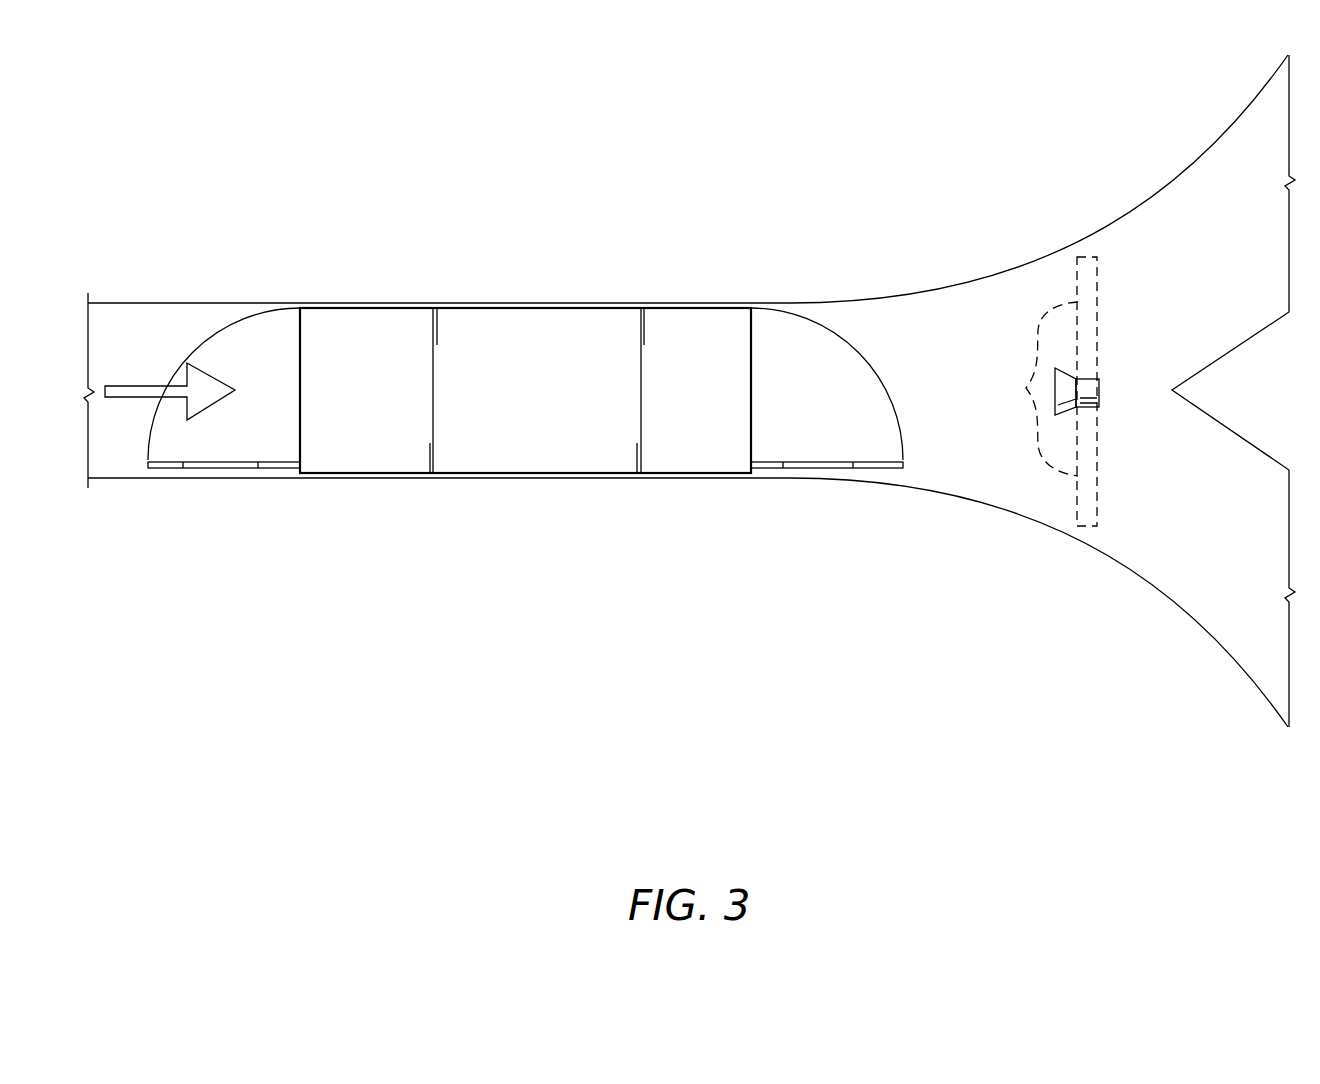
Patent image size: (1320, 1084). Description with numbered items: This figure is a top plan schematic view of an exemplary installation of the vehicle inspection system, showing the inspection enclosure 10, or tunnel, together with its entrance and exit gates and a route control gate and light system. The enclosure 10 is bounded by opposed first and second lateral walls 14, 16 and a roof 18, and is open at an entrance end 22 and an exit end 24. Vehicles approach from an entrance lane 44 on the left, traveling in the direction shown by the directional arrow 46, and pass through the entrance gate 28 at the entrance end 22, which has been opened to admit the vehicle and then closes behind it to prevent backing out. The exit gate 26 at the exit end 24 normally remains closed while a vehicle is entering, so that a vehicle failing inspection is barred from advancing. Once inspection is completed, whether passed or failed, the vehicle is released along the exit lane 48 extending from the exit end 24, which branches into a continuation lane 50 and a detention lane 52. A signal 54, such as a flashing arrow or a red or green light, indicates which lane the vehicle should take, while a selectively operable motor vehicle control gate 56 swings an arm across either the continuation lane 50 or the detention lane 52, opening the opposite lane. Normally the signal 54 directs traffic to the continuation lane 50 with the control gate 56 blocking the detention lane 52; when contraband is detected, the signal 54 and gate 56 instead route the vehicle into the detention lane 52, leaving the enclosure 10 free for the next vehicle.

The enclosure 10 is at (531, 477).
The first lateral wall 14 is at (505, 303).
The second lateral wall 16 is at (505, 478).
The roof 18 is at (549, 420).
The entrance end 22 is at (298, 415).
The exit end 24 is at (751, 415).
The exit end gate 26 is at (905, 488).
The entrance gate 28 is at (170, 478).
The entrance lane 44 is at (170, 302).
The directional arrow 46 is at (147, 385).
The exit lane 48 is at (905, 297).
The continuation lane 50 is at (1195, 160).
The detention lane 52 is at (1197, 622).
The signal 54 is at (1090, 378).
The motor vehicle control gate 56 is at (1038, 389).